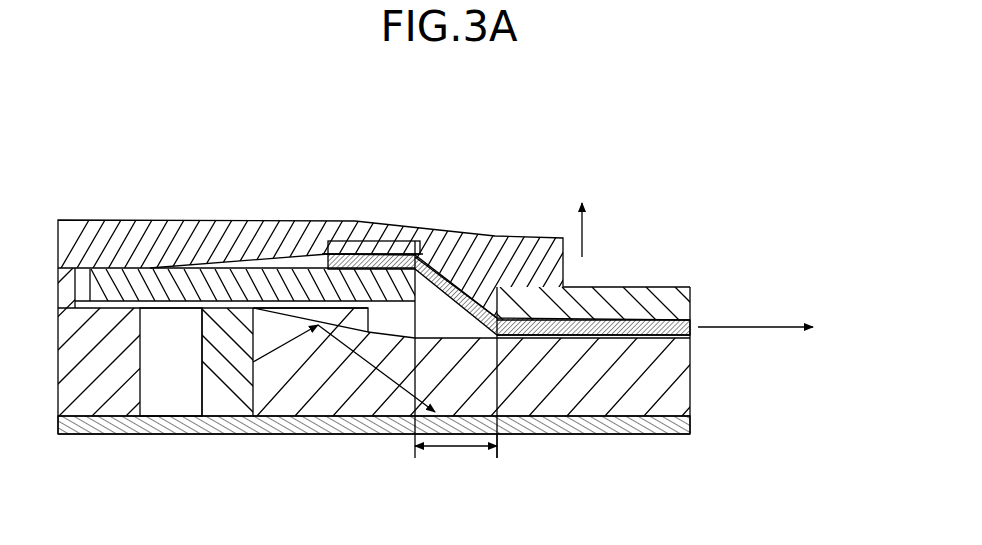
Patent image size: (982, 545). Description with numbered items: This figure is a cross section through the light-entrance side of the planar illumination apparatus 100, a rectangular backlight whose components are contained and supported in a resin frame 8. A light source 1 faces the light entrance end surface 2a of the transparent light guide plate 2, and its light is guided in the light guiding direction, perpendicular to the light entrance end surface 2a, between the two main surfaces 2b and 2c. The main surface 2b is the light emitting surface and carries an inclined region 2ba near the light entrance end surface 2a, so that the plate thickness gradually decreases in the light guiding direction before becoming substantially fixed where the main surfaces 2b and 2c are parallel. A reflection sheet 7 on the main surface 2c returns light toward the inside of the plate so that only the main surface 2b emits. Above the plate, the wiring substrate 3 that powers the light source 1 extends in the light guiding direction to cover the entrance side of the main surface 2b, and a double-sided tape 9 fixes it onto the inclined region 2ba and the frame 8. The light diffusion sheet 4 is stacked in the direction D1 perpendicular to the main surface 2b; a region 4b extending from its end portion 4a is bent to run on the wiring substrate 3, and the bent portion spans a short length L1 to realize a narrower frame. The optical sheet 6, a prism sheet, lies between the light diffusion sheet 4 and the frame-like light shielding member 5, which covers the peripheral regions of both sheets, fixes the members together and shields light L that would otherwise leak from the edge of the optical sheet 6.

The planar illumination apparatus 100 is at (721, 127).
The light source 1 is at (213, 413).
The light guide plate 2 is at (692, 407).
The light entrance end surface 2a is at (250, 372).
The main surface 2b is at (688, 287).
The inclined region 2ba is at (447, 226).
The main surface 2c is at (650, 436).
The wiring substrate 3 is at (283, 286).
The light diffusion sheet 4 is at (622, 313).
The end portion 4a is at (333, 250).
The region 4b is at (378, 241).
The light shielding member 5 is at (195, 240).
The optical sheet 6 is at (672, 331).
The reflection sheet 7 is at (605, 436).
The frame 8 is at (100, 408).
The double-sided tape 9 is at (348, 316).
The light L is at (393, 335).
The length L1 is at (456, 406).
The direction D1 is at (601, 230).